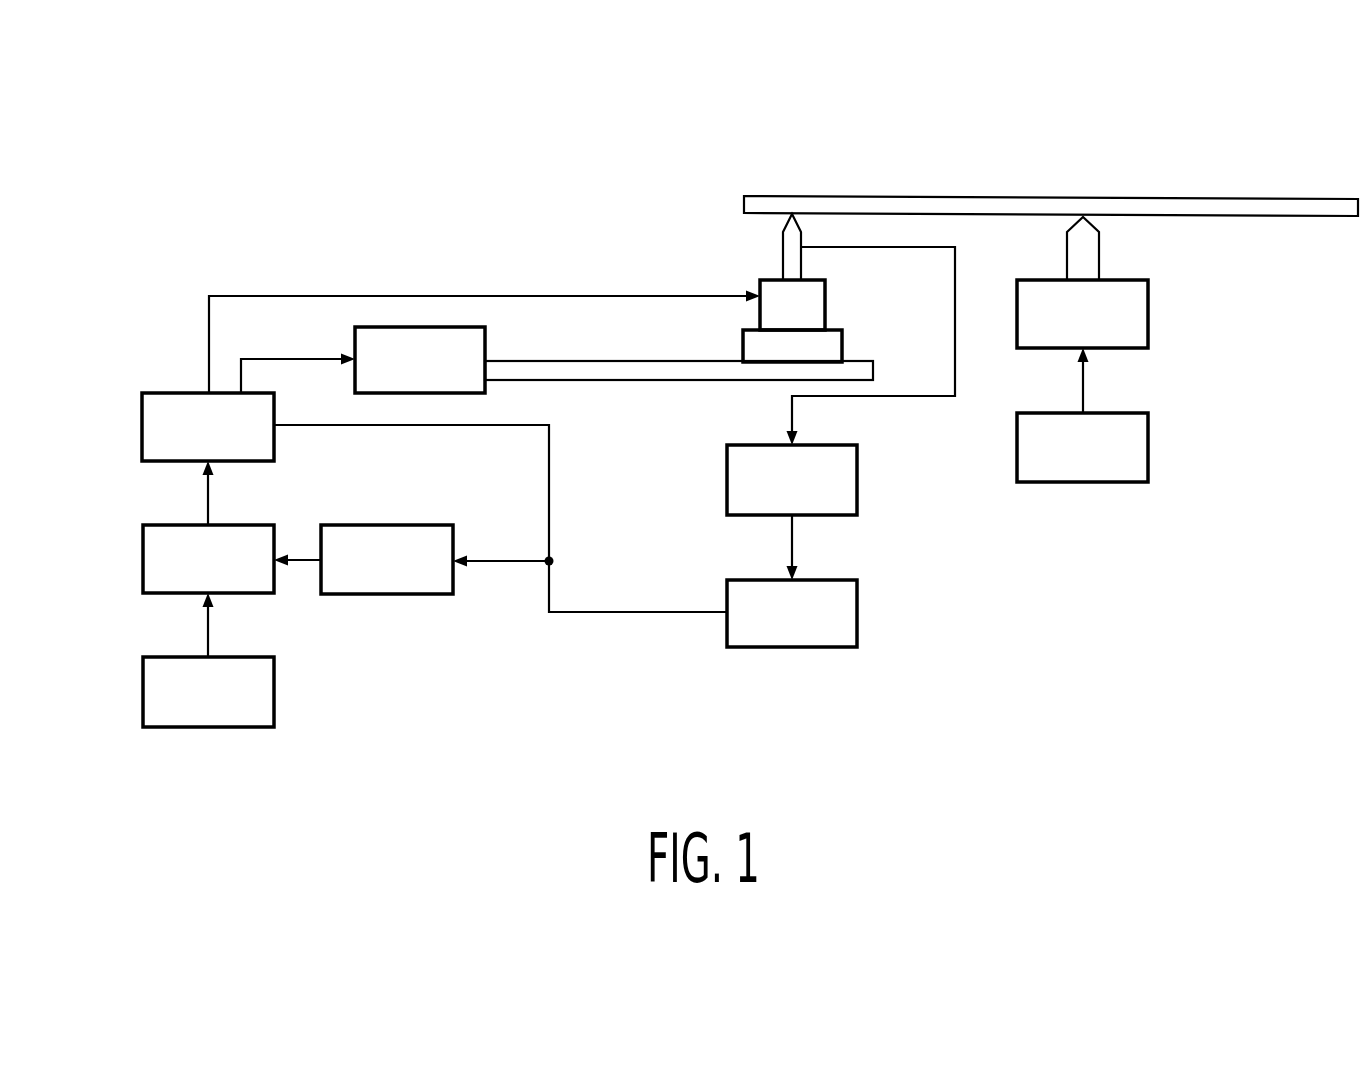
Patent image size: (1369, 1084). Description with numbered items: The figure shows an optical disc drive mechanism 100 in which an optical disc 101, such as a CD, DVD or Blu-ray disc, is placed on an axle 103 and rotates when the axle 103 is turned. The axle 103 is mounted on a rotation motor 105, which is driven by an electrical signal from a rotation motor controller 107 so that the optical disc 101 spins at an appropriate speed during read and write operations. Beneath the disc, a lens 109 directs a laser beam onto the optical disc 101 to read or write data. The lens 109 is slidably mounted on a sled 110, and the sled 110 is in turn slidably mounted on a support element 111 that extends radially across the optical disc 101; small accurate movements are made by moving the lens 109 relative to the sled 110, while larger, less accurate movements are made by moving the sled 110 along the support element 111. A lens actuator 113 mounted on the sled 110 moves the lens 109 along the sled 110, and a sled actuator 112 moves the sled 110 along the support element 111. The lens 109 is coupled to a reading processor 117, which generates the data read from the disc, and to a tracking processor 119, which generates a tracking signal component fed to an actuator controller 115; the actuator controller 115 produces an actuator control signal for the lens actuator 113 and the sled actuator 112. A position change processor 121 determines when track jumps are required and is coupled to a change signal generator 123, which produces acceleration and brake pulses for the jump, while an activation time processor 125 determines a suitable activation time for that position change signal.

The optical disc drive mechanism 100 is at (1232, 739).
The optical disc 101 is at (1238, 198).
The axle 103 is at (1099, 243).
The rotation motor 105 is at (1148, 312).
The rotation motor controller 107 is at (1148, 443).
The lens 109 is at (783, 246).
The sled 110 is at (842, 340).
The support element 111 is at (636, 381).
The sled actuator 112 is at (355, 341).
The lens actuator 113 is at (760, 292).
The actuator controller 115 is at (142, 421).
The reading processor 117 is at (857, 479).
The tracking processor 119 is at (857, 612).
The position change processor 121 is at (143, 686).
The change signal generator 123 is at (143, 554).
The activation time processor 125 is at (410, 595).